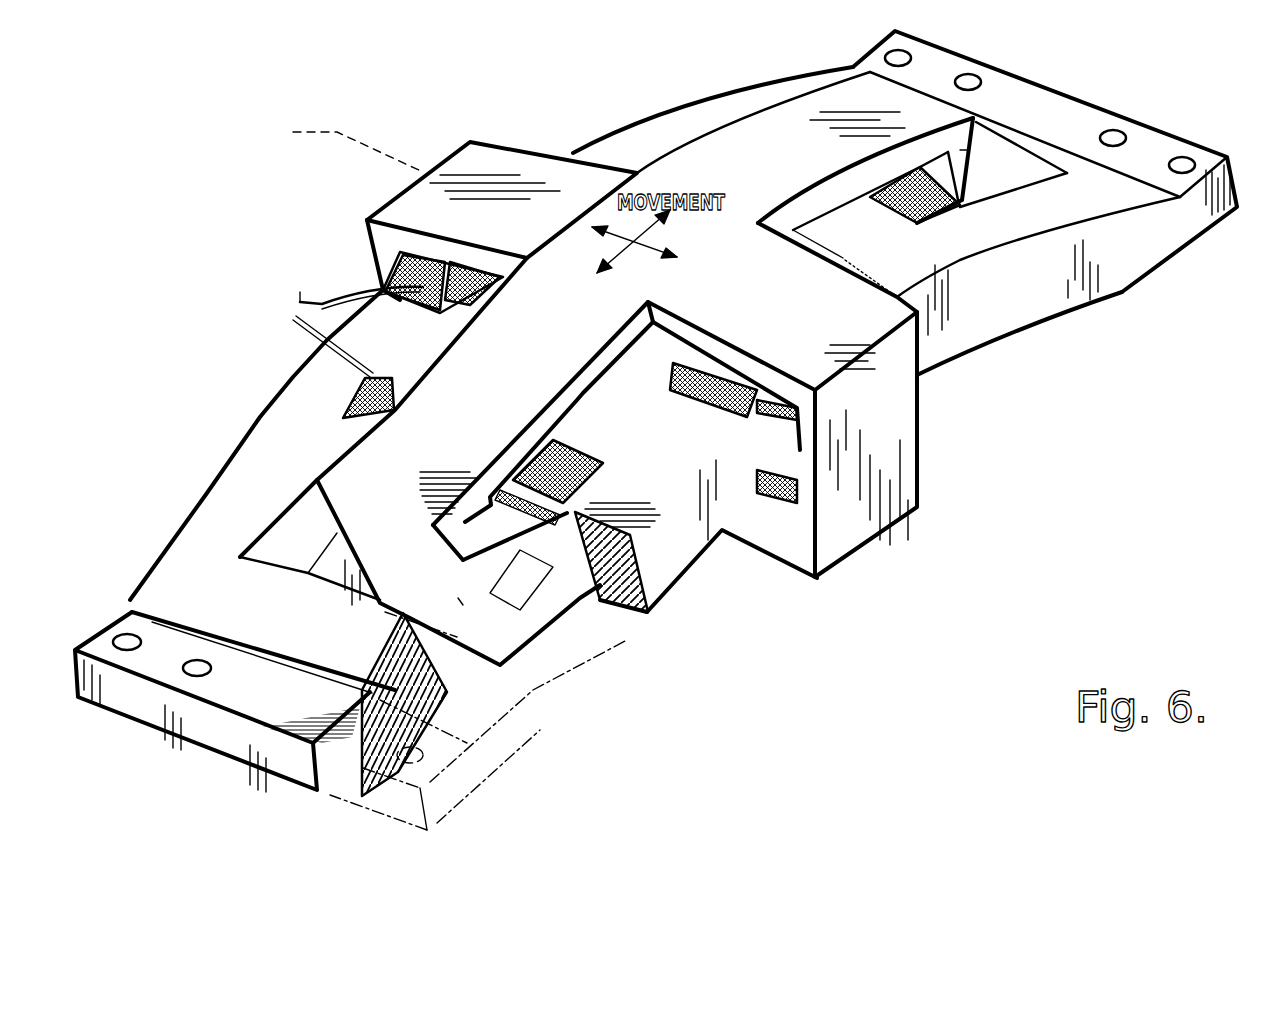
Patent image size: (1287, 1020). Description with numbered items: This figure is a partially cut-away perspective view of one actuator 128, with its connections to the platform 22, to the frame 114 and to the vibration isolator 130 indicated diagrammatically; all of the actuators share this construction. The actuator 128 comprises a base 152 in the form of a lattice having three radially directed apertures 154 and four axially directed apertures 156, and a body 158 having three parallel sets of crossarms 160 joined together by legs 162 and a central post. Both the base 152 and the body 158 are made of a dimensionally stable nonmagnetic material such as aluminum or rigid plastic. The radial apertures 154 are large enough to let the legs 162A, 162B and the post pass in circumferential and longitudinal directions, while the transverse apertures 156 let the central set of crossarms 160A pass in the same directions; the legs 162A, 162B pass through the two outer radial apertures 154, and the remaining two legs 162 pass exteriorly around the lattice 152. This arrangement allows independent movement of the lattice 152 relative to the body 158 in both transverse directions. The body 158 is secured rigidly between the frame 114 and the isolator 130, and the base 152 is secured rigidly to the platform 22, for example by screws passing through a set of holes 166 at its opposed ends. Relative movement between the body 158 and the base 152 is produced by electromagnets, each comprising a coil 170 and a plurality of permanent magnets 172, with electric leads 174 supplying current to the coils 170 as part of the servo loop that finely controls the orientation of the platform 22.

The platform 22 is at (255, 826).
The frame 114 is at (983, 672).
The actuator 128 is at (258, 412).
The isolator 130 is at (305, 178).
The base 152 is at (1027, 333).
The radial apertures 154 is at (277, 517).
The axial apertures 156 is at (724, 532).
The body 158 is at (908, 524).
The crossarms 160 is at (752, 120).
The central set of crossarms 160A is at (961, 451).
The legs 162 is at (378, 246).
The leg 162A is at (531, 686).
The leg 162B is at (978, 125).
The holes 166 is at (905, 55).
The coil 170 is at (423, 287).
The permanent magnets 172 is at (583, 400).
The electric leads 174 is at (300, 300).